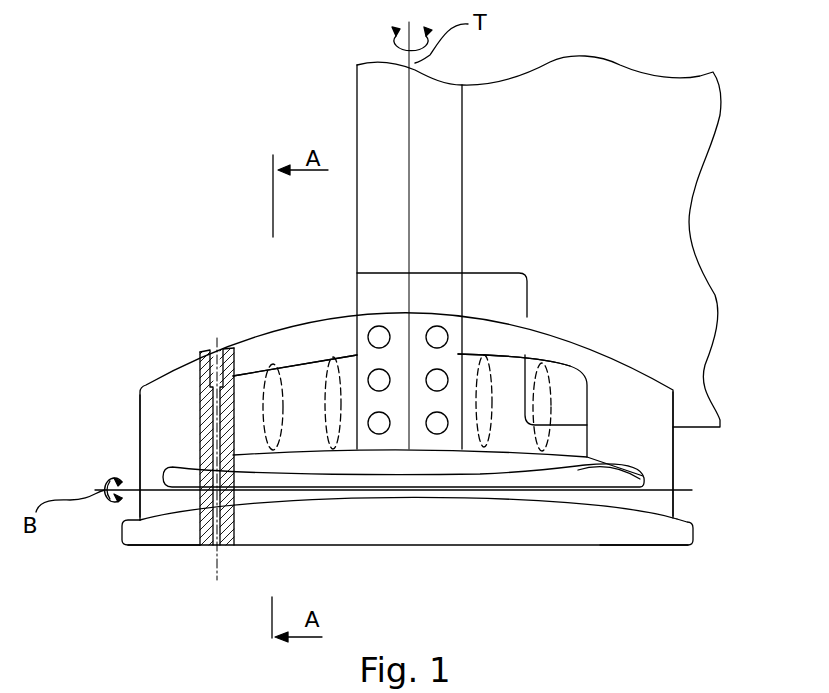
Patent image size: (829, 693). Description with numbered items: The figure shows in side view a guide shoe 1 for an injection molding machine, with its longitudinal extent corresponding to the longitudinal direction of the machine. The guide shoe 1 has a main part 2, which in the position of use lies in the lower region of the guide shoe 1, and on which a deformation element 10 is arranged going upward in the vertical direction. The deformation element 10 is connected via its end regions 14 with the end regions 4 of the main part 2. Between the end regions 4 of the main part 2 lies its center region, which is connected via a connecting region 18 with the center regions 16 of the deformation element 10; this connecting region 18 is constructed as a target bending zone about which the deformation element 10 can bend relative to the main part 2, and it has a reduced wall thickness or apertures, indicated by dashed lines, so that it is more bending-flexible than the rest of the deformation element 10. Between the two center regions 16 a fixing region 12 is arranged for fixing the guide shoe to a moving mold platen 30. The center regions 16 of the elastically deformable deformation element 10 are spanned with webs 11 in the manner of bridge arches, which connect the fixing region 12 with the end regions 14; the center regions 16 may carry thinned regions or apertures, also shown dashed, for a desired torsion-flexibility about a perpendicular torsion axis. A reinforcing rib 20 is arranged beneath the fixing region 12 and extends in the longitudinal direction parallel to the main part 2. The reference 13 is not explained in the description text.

The guide shoe 1 is at (189, 179).
The main part 2 is at (122, 536).
The end regions of the main part 4 is at (176, 540).
The deformation element 10 is at (138, 443).
The webs 11 is at (323, 337).
The fixing region 12 is at (402, 322).
The openings 13 is at (395, 342).
The end regions of the deformation element 14 is at (172, 392).
The center regions of the deformation element 16 is at (300, 395).
The connecting region 18 is at (187, 497).
The reinforcing rib 20 is at (683, 505).
The moving mold platen 30 is at (386, 86).